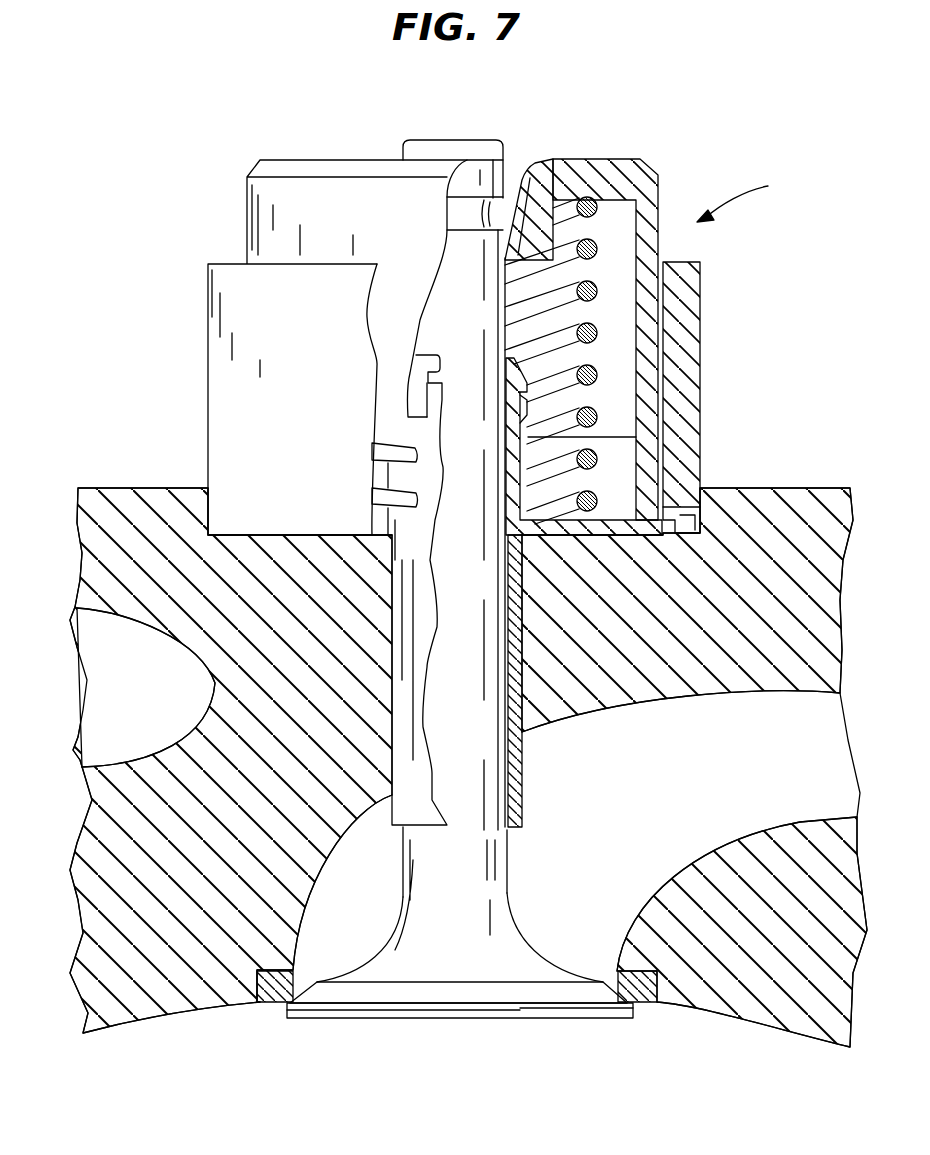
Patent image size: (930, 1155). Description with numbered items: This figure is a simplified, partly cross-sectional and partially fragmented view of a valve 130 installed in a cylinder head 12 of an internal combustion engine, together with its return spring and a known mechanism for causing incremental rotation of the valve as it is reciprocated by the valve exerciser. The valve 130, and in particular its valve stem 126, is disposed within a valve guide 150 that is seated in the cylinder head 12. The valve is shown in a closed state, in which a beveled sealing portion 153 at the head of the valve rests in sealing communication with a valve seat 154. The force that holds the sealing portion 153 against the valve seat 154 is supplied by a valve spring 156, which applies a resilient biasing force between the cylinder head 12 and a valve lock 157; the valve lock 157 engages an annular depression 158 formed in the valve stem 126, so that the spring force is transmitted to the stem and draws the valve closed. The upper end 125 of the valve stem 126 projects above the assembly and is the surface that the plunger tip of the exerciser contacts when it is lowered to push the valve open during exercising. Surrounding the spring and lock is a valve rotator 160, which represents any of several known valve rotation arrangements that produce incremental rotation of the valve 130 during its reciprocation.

The cylinder head 12 is at (805, 497).
The end of valve stem 125 is at (452, 140).
The valve stem 126 is at (467, 752).
The valve 130 is at (520, 1012).
The valve guide 150 is at (522, 797).
The beveled sealing portion 153 is at (433, 1003).
The valve seat 154 is at (267, 1002).
The valve spring 156 is at (600, 462).
The valve lock 157 is at (517, 213).
The annular depression 158 is at (468, 235).
The valve rotator 160 is at (736, 354).